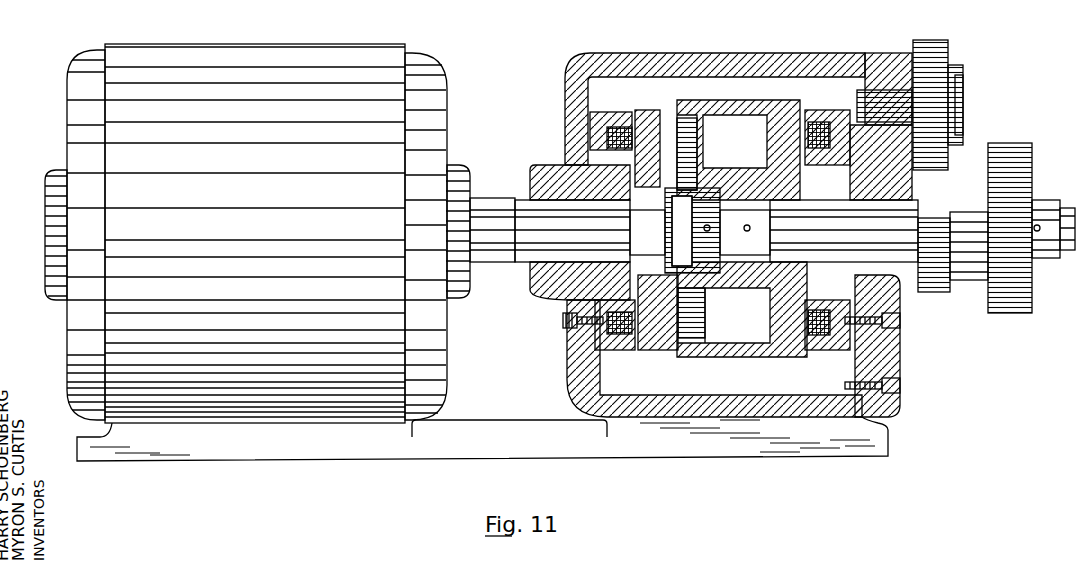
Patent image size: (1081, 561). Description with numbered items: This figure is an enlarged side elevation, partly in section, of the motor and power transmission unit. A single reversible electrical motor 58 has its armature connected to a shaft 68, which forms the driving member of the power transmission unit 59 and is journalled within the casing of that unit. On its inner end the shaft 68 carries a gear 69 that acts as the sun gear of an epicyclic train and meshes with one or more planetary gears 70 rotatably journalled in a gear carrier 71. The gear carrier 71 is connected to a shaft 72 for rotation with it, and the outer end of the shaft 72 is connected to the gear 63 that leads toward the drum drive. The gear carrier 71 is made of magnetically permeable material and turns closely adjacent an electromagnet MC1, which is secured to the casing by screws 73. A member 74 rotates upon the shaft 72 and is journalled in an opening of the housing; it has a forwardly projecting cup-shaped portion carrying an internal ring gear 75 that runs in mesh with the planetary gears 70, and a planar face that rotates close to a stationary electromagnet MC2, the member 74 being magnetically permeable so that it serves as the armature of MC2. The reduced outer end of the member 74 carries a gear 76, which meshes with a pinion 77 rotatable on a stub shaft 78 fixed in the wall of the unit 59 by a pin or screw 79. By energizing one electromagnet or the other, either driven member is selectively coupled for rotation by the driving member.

The reversible electrical motor 58 is at (209, 60).
The power transmission unit 59 is at (605, 48).
The shaft 68 is at (527, 210).
The gear 69 is at (682, 207).
The planetary gears 70 is at (680, 118).
The gear carrier 71 is at (652, 350).
The shaft 72 is at (1052, 207).
The screws 73 is at (563, 321).
The member 74 is at (752, 107).
The internal ring gear 75 is at (688, 337).
The gear 76 is at (947, 292).
The pinion 77 is at (937, 47).
The stub shaft 78 is at (961, 107).
The pin or screw 79 is at (893, 100).
The gear 63 is at (1003, 150).
The electromagnet MC1 is at (632, 112).
The electromagnet MC2 is at (828, 112).